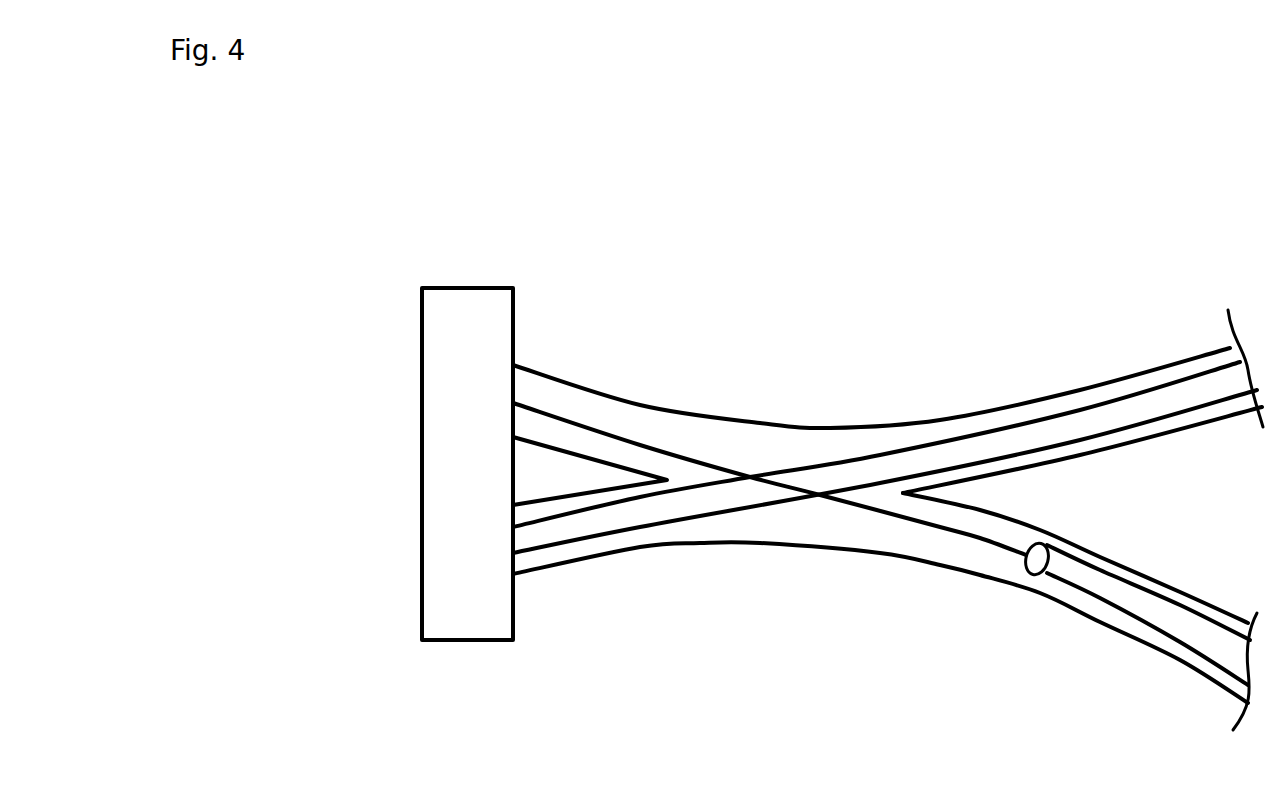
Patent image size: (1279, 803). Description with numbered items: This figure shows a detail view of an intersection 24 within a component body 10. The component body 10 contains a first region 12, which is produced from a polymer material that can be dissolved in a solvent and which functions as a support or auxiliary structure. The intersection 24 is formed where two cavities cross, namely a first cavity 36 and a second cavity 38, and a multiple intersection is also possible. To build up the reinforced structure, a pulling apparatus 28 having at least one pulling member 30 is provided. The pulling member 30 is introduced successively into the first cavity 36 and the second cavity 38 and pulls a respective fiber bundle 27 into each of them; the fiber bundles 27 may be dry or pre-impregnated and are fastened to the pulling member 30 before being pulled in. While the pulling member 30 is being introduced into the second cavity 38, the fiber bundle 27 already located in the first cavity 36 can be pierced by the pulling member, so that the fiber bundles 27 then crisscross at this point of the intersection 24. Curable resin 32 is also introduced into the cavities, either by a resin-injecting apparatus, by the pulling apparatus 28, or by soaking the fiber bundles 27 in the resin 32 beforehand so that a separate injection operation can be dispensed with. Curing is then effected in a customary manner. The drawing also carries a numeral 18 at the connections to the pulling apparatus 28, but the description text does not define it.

The component body 10 is at (645, 199).
The first region 12 is at (913, 420).
The attachment points 18 is at (511, 380).
The intersection 24 is at (818, 360).
The fiber bundle 27 is at (1098, 427).
The pulling apparatus 28 is at (470, 624).
The pulling member 30 is at (587, 423).
The curable resin 32 is at (767, 447).
The first cavity 36 is at (540, 395).
The second cavity 38 is at (970, 557).